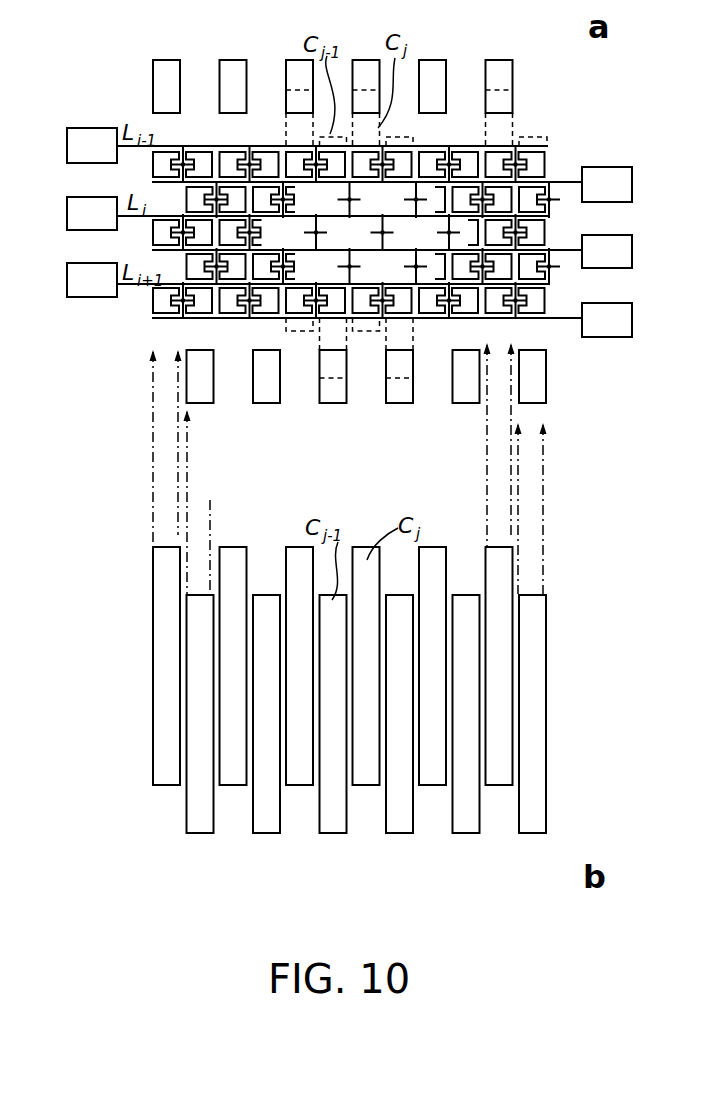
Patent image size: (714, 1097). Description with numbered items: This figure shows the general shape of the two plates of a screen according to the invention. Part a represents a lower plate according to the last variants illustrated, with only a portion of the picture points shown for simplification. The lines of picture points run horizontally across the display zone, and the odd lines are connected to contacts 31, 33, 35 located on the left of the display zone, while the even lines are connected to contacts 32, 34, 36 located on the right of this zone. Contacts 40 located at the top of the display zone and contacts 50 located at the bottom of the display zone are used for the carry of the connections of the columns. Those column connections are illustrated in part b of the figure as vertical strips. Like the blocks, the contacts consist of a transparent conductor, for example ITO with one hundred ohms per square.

The contact 31 is at (76, 146).
The contact 32 is at (609, 186).
The contact 33 is at (102, 210).
The contact 34 is at (607, 250).
The contact 35 is at (92, 272).
The contact 36 is at (620, 318).
The contacts 40 is at (229, 97).
The contacts 50 is at (330, 409).